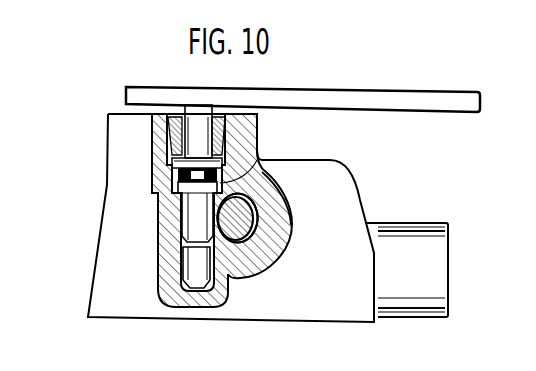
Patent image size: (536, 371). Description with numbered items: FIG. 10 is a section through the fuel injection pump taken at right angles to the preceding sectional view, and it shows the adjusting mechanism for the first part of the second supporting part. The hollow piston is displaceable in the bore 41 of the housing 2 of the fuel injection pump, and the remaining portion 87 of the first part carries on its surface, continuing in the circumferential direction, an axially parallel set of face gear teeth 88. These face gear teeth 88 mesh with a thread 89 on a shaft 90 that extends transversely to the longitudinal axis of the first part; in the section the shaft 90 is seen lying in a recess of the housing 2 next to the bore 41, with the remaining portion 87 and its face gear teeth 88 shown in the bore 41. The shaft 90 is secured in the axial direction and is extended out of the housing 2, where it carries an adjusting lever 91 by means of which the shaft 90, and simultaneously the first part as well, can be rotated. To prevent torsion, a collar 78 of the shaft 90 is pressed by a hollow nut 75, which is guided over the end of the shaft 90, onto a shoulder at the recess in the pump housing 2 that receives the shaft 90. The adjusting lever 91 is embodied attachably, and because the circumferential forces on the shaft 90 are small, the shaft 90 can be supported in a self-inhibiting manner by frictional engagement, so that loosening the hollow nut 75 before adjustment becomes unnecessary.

The housing 2 is at (271, 260).
The bore 41 is at (266, 209).
The hollow nut 75 is at (170, 142).
The collar 78 is at (176, 170).
The remaining portion 87 is at (243, 218).
The face gear teeth 88 is at (270, 249).
The thread 89 is at (178, 226).
The shaft 90 is at (192, 265).
The adjusting lever 91 is at (362, 94).